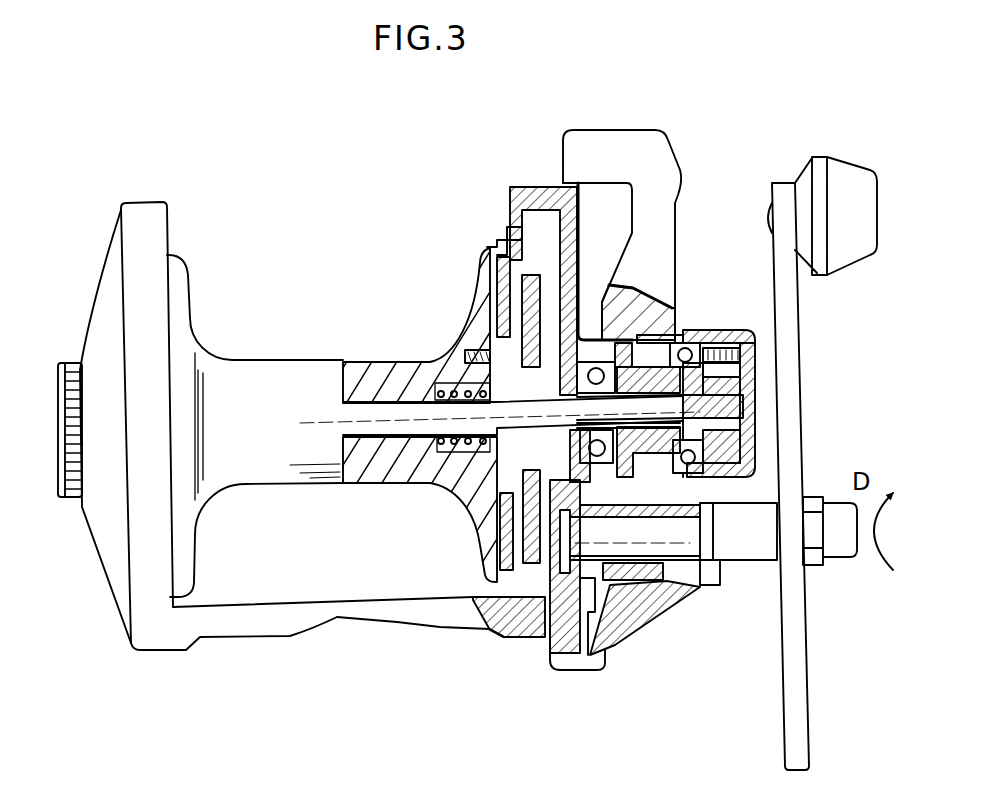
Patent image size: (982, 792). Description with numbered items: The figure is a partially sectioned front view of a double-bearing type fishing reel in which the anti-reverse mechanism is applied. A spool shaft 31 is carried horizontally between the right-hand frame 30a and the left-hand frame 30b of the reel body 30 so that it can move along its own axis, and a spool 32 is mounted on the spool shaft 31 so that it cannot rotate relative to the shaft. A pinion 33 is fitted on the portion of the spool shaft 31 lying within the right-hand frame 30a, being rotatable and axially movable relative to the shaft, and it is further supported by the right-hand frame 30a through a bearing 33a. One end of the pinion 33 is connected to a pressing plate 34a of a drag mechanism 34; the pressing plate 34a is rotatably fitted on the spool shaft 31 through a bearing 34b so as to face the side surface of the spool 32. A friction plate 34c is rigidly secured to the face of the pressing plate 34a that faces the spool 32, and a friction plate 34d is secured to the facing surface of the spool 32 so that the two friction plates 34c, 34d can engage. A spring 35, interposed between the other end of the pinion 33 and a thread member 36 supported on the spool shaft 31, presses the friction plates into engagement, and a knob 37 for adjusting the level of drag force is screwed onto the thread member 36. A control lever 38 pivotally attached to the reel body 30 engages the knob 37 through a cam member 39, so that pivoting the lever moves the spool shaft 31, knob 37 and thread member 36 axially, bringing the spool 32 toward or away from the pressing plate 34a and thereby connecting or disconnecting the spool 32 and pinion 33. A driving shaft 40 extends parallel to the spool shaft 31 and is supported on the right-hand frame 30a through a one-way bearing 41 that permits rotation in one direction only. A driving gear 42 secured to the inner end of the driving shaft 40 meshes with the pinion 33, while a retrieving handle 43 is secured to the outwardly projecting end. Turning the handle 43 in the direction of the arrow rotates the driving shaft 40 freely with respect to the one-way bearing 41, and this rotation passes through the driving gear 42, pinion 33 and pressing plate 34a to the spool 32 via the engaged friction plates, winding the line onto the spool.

The reel body 30 is at (142, 200).
The right-hand frame 30a is at (545, 187).
The left-hand frame 30b is at (102, 270).
The spool shaft 31 is at (370, 423).
The spool 32 is at (180, 330).
The pinion 33 is at (582, 270).
The bearing 33a is at (633, 290).
The drag mechanism 34 is at (477, 510).
The pressing plate 34a is at (507, 227).
The bearing 34b is at (463, 490).
The friction plate 34c is at (497, 247).
The friction plate 34d is at (487, 277).
The spring 35 is at (670, 323).
The thread member 36 is at (677, 340).
The knob 37 is at (755, 365).
The control lever 38 is at (652, 153).
The cam member 39 is at (730, 580).
The driving shaft 40 is at (680, 582).
The one-way bearing 41 is at (637, 598).
The driving gear 42 is at (558, 663).
The retrieving handle 43 is at (798, 723).